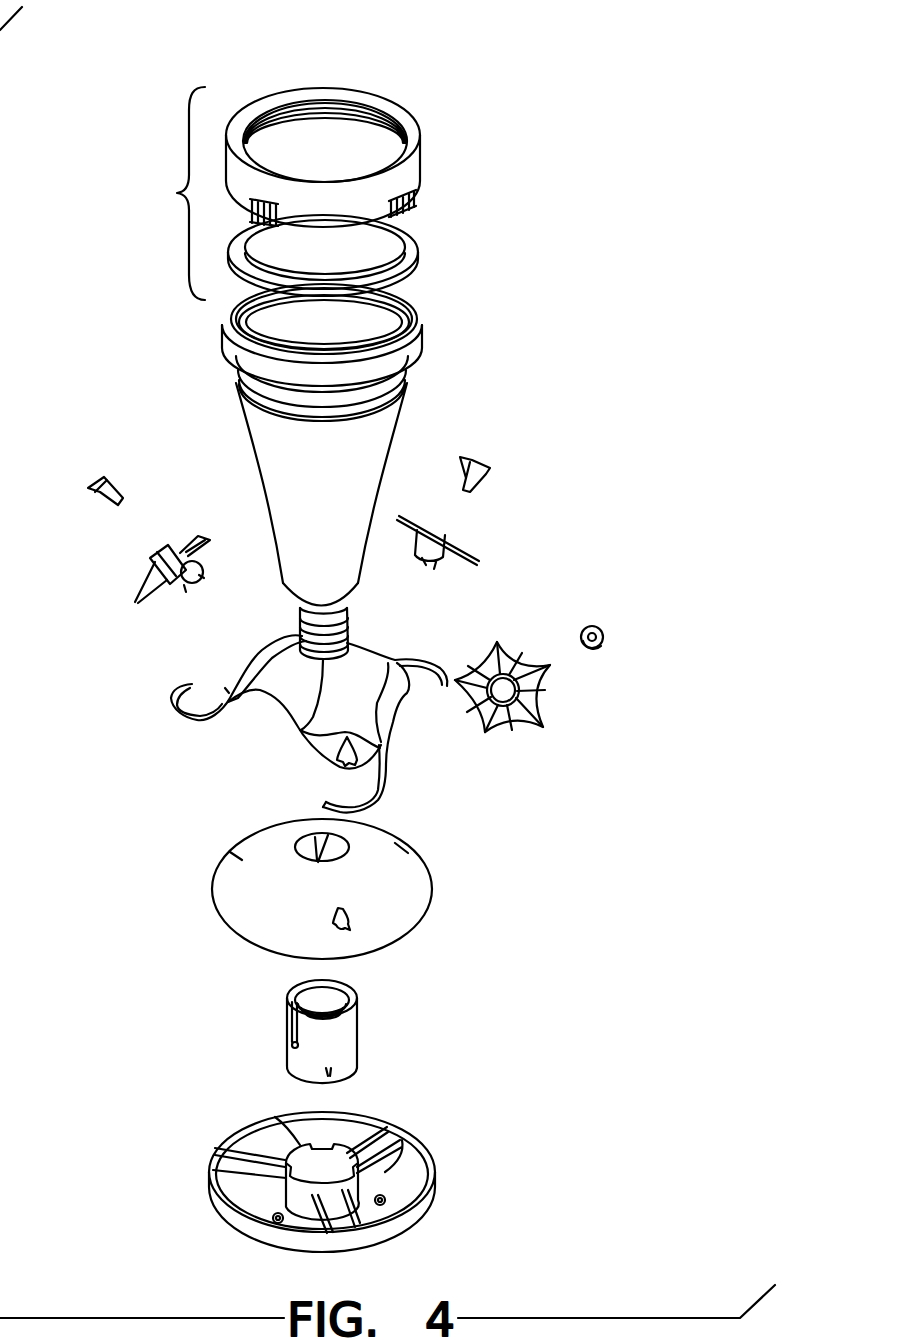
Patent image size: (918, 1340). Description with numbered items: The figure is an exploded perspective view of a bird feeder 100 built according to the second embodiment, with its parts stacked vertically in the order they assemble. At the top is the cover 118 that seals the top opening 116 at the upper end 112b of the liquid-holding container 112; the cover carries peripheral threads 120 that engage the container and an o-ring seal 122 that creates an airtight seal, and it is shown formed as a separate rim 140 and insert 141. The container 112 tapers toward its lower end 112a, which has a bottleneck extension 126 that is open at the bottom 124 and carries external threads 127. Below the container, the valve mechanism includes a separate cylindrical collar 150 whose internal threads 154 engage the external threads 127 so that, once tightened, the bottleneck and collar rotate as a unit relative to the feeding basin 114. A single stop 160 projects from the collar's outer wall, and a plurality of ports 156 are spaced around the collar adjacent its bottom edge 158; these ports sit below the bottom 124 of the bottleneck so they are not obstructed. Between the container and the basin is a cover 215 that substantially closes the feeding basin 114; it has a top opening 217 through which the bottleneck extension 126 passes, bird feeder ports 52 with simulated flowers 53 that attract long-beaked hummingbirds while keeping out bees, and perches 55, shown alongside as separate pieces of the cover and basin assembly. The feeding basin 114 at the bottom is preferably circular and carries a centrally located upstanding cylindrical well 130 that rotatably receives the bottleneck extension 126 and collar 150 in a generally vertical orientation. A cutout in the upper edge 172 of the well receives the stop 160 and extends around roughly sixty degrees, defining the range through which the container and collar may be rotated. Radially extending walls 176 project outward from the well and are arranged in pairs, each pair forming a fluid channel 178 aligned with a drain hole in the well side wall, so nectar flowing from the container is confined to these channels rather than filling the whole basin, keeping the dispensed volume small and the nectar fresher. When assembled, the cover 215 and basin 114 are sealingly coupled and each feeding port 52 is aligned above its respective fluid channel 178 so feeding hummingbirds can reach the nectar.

The bird feeder 100 is at (639, 187).
The liquid-holding container 112 is at (370, 447).
The lower end of the container 112a is at (300, 590).
The upper end of the container 112b is at (262, 418).
The feeding basin 114 is at (403, 1178).
The sealable top opening 116 is at (370, 323).
The cover 118 is at (159, 193).
The peripheral threads 120 is at (326, 106).
The o-ring seal 122 is at (412, 314).
The bottom of the bottleneck extension 124 is at (307, 727).
The bottleneck extension 126 is at (350, 637).
The external threads 127 is at (300, 613).
The cylindrical well 130 is at (283, 1183).
The rim 140 is at (413, 140).
The insert 141 is at (430, 240).
The cylindrical collar 150 is at (350, 1043).
The internal threads 154 is at (330, 997).
The ports 156 is at (305, 1064).
The bottom edge of the collar 158 is at (307, 1080).
The stop 160 is at (295, 1027).
The upper edge of the well side wall 172 is at (313, 1138).
The radially extending walls 176 is at (235, 1178).
The fluid channel 178 is at (390, 1135).
The cover of the feeding basin 215 is at (397, 880).
The top opening of the cover 217 is at (350, 850).
The bird feeder ports 52 is at (237, 853).
The simulated flowers 53 is at (157, 560).
The perches 55 is at (427, 670).